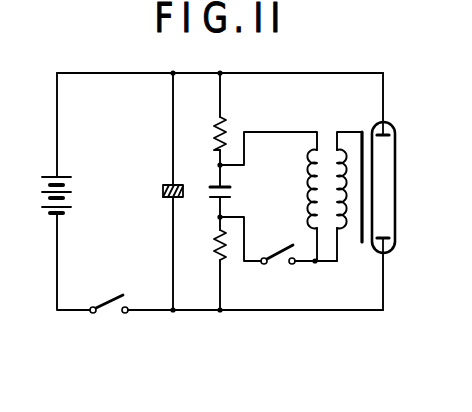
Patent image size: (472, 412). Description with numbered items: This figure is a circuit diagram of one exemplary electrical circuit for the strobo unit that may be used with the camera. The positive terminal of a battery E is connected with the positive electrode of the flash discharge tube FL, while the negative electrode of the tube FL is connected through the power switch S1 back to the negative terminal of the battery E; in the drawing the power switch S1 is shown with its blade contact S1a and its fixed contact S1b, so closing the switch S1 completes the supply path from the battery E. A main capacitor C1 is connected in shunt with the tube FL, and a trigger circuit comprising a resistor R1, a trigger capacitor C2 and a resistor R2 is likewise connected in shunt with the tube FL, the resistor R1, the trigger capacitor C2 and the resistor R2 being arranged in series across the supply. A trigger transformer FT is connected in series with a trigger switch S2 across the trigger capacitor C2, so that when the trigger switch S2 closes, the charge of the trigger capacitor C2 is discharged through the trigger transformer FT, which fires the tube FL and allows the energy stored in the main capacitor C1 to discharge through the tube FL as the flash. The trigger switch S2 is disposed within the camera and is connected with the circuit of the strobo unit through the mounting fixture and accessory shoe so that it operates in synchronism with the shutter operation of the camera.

The battery E is at (70, 200).
The main capacitor C1 is at (163, 190).
The resistor R1 is at (214, 130).
The trigger capacitor C2 is at (229, 191).
The resistor R2 is at (215, 247).
The trigger transformer FT is at (310, 190).
The flash discharge tube FL is at (396, 188).
The power switch S1 is at (124, 313).
The switch blade contact S1a is at (107, 301).
The switch contact S1b is at (107, 315).
The trigger switch S2 is at (278, 256).